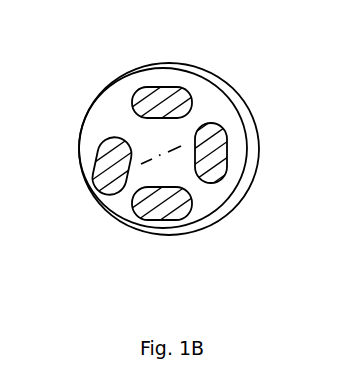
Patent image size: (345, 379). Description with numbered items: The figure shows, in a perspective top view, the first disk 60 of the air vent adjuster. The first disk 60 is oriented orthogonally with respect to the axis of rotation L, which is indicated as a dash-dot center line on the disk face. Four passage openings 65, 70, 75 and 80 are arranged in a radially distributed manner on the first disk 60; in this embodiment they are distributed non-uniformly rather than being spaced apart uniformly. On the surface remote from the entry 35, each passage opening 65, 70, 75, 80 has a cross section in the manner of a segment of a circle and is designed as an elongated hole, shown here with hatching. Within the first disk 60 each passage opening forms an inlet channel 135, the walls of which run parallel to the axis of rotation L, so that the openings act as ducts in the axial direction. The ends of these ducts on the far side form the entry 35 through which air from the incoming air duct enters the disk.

The entry 35 is at (237, 83).
The first disk 60 is at (108, 108).
The passage opening 65 is at (162, 100).
The passage opening 70 is at (103, 163).
The passage opening 75 is at (219, 141).
The passage opening 80 is at (162, 212).
The inlet channel 135 is at (148, 101).
The axis of rotation L is at (150, 154).